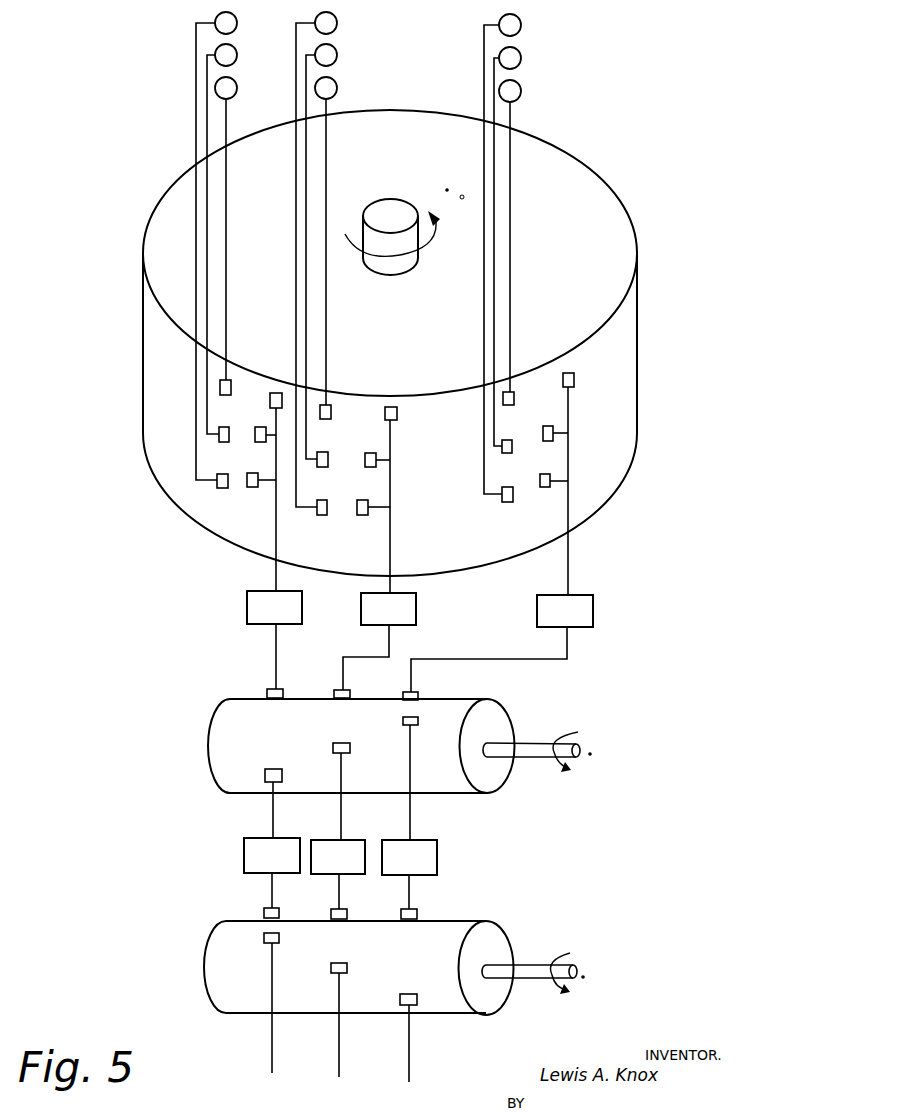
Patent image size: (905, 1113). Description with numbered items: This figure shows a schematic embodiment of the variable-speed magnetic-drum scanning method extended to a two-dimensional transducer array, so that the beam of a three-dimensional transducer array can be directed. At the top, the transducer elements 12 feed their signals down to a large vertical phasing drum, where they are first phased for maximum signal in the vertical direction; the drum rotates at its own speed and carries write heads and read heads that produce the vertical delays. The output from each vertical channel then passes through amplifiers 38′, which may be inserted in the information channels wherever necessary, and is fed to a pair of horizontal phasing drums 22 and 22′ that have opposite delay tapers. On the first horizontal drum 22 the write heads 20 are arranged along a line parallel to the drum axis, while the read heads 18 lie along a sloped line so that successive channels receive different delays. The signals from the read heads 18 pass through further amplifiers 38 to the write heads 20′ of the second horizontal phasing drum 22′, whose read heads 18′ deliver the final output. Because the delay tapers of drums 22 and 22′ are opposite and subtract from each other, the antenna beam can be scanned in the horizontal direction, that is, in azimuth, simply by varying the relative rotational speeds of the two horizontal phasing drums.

The transducer elements 12 is at (316, 22).
The amplifiers 38′ is at (372, 603).
The write heads 20 is at (267, 695).
The magnetic drum 22 is at (500, 708).
The read heads 18 is at (265, 774).
The amplifiers 38 is at (393, 843).
The write heads 20′ is at (263, 914).
The magnetic drum 22′ is at (500, 930).
The read heads 18′ is at (263, 938).